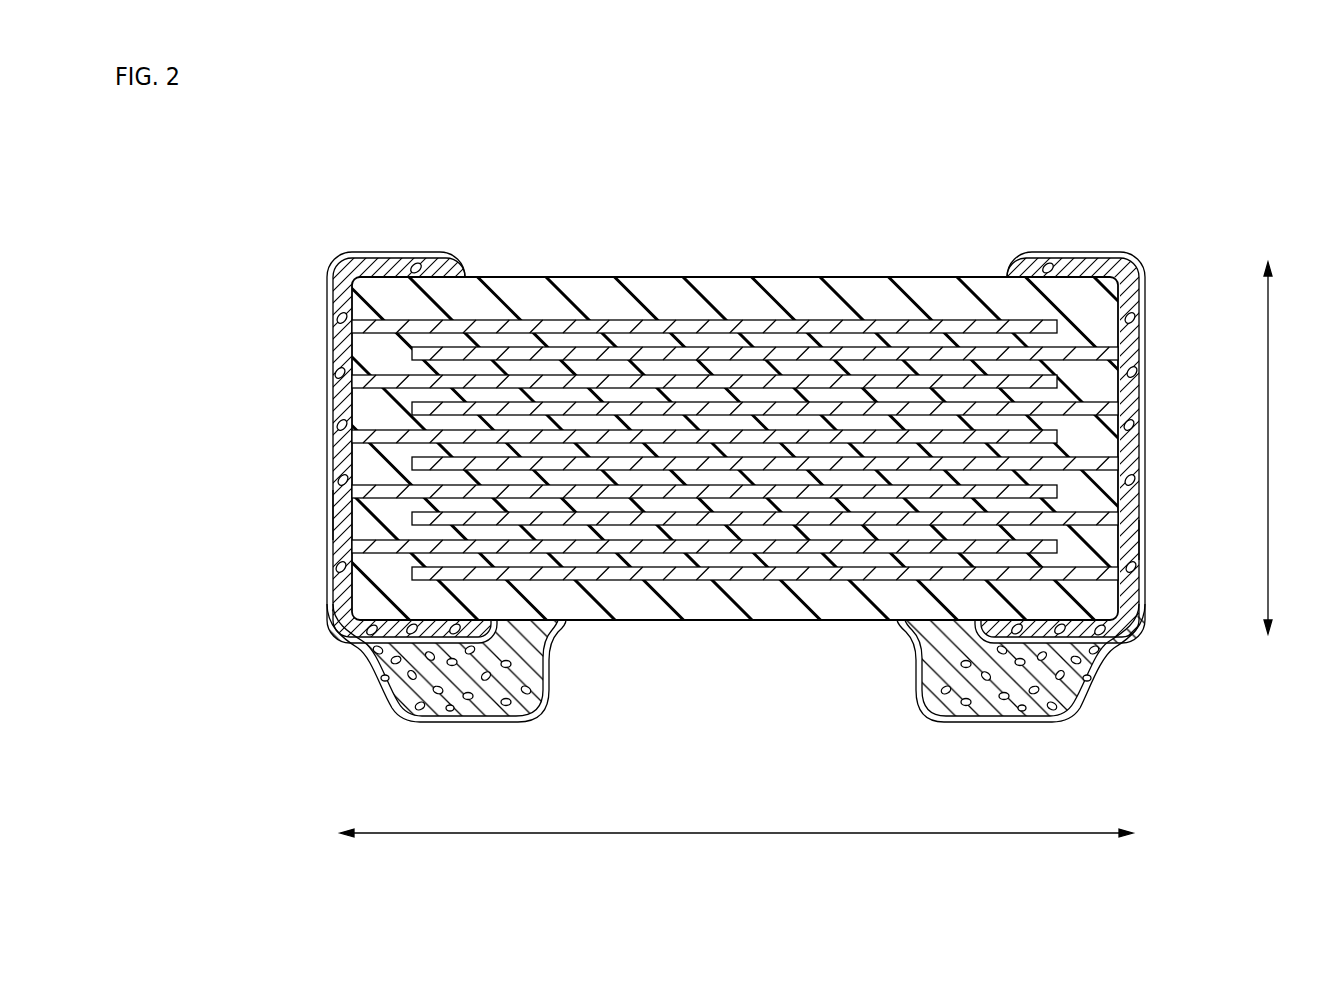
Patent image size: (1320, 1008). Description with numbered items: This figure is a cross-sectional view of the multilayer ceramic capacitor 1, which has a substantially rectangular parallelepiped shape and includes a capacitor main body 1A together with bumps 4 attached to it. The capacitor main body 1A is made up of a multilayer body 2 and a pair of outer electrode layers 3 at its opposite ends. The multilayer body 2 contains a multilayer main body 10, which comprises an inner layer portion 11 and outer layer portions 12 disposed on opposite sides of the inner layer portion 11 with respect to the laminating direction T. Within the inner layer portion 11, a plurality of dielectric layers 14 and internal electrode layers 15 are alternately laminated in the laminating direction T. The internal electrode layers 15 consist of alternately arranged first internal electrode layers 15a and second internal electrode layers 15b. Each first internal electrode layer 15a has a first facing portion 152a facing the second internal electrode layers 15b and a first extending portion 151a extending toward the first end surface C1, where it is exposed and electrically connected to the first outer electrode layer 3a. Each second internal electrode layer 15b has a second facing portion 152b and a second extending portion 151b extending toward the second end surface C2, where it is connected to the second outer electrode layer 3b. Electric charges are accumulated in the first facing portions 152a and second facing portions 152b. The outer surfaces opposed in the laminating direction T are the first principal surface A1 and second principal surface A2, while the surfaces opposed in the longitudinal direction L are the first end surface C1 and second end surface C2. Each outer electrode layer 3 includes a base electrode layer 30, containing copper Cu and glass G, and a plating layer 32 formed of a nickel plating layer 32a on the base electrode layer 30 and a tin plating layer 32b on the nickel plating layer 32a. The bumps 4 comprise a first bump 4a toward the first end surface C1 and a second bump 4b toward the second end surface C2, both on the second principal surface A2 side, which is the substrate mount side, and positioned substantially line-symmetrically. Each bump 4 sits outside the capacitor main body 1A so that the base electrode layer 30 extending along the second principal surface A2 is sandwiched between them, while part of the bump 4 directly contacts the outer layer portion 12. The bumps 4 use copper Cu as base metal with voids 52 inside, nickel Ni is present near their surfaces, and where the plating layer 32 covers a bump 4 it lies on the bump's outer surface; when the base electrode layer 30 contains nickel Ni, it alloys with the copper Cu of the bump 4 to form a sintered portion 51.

The multilayer ceramic capacitor 1 is at (694, 446).
The capacitor main body 1A is at (694, 402).
The multilayer body 2 is at (694, 421).
The outer electrode layers 3 is at (736, 389).
The first outer electrode layer 3a is at (369, 389).
The second outer electrode layer 3b is at (1102, 447).
The base electrode layer 30 is at (445, 264).
The plating layer 32 is at (412, 407).
The nickel plating layer 32a is at (407, 258).
The tin plating layer 32b is at (432, 211).
The multilayer main body 10 is at (694, 449).
The inner layer portion 11 is at (694, 448).
The outer layer portions 12 is at (392, 298).
The dielectric layer 14 is at (372, 343).
The internal electrode layer 15 is at (737, 450).
The first internal electrode layers 15a is at (636, 436).
The second internal electrode layers 15b is at (836, 463).
The first extending portion 151a is at (392, 376).
The first facing portion 152a is at (404, 398).
The second extending portion 151b is at (1110, 408).
The second facing portion 152b is at (1035, 413).
The bumps 4 is at (704, 700).
The first bump 4a is at (435, 699).
The second bump 4b is at (960, 735).
The sintered portion 51 is at (410, 648).
The voids 52 is at (555, 643).
The first principal surface A1 is at (838, 277).
The second principal surface A2 is at (782, 622).
The first end surface C1 is at (340, 516).
The second end surface C2 is at (1125, 540).
The copper Cu is at (348, 640).
The nickel Ni is at (390, 688).
The glass G is at (362, 650).
The laminating direction T is at (1276, 448).
The longitudinal direction L is at (736, 845).